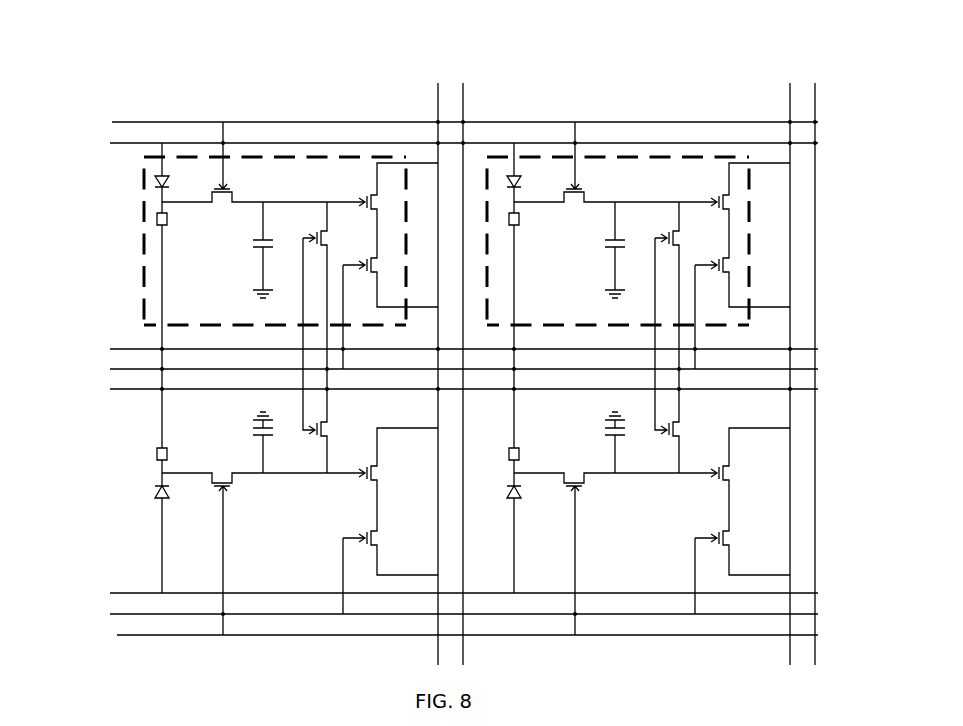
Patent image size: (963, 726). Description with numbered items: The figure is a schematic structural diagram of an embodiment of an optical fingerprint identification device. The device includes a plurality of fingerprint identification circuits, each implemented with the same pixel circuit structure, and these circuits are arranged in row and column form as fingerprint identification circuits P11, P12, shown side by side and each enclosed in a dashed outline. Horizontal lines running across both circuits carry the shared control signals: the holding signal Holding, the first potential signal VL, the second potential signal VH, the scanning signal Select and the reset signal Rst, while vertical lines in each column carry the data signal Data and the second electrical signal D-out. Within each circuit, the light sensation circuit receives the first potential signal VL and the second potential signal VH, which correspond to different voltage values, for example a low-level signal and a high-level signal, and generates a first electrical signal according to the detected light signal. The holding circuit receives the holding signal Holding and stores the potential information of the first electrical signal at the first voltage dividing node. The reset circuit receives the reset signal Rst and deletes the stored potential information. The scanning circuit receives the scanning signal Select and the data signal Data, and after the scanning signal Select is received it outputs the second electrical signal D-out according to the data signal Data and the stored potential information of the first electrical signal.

The fingerprint identification circuit P11 is at (339, 157).
The fingerprint identification circuit P12 is at (691, 157).
The holding signal Holding is at (427, 378).
The first potential signal VL is at (440, 369).
The second potential signal VH is at (441, 349).
The scanning signal Select is at (437, 491).
The reset signal Rst is at (442, 391).
The data signal Data is at (595, 359).
The second electrical signal D-out is at (647, 359).